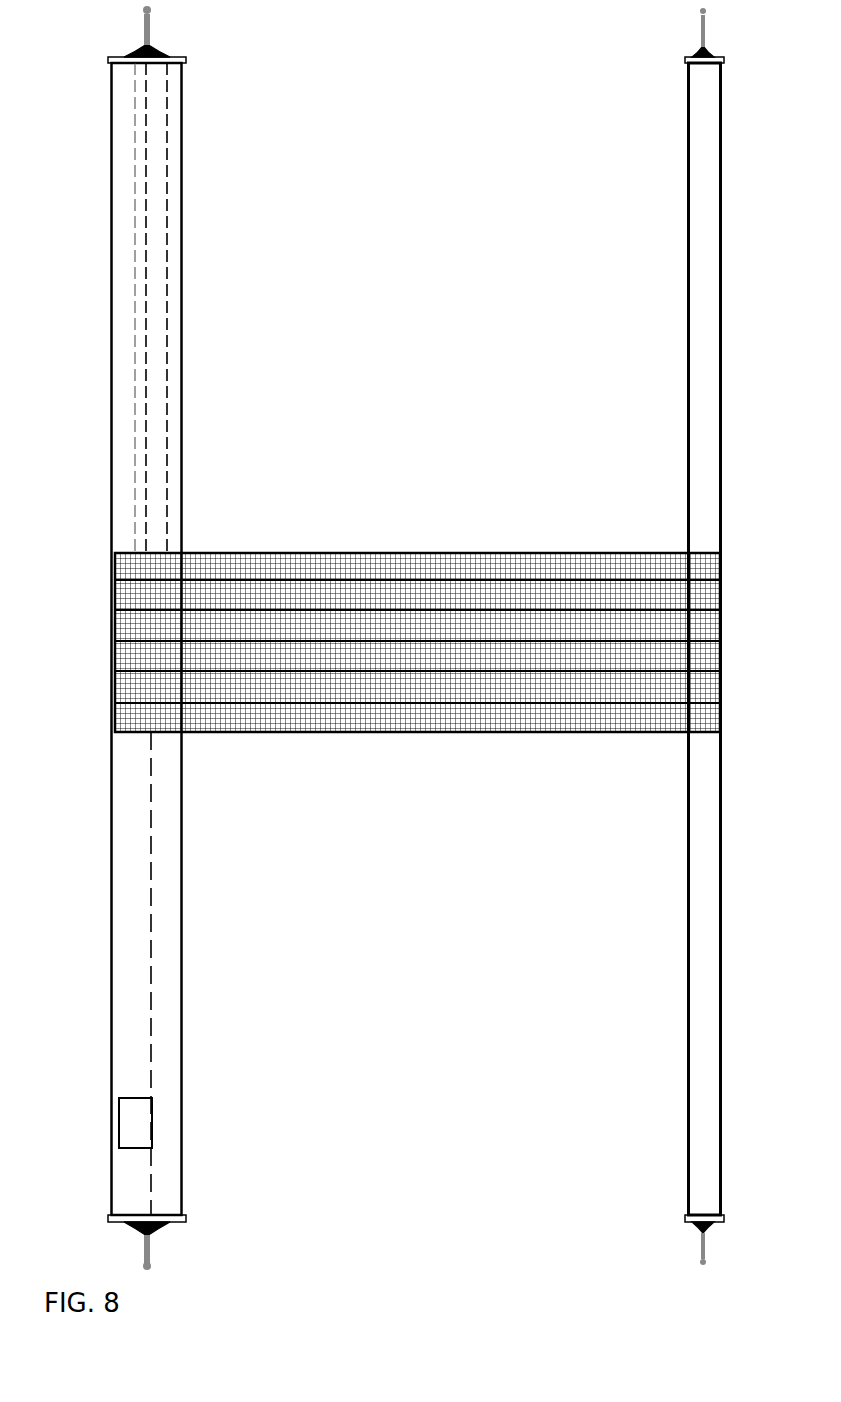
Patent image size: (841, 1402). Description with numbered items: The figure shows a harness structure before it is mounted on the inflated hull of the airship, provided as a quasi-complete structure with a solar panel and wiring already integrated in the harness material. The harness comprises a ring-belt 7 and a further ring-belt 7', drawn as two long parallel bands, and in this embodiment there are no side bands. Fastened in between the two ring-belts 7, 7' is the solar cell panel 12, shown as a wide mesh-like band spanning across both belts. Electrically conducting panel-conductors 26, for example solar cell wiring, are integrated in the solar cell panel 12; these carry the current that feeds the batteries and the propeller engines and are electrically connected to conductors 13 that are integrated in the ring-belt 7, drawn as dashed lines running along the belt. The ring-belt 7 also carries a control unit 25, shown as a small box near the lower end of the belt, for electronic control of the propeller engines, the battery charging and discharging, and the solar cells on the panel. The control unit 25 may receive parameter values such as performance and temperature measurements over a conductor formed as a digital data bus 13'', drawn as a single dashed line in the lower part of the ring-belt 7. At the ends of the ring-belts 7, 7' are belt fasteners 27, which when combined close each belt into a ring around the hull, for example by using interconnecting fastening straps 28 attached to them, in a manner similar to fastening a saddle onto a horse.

The ring-belt 7 is at (213, 639).
The further ring-belt 7' is at (635, 639).
The solar cell panel 12 is at (390, 553).
The conductors 13 is at (233, 308).
The data bus 13'' is at (247, 973).
The control unit 25 is at (138, 1122).
The panel-conductors 26 is at (520, 578).
The belt fastener 27 is at (186, 60).
The fastening strap 28 is at (147, 22).